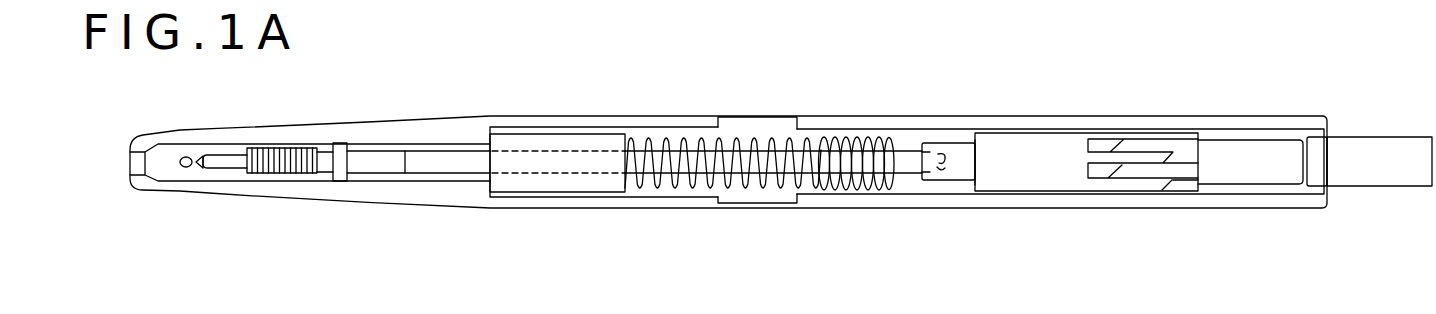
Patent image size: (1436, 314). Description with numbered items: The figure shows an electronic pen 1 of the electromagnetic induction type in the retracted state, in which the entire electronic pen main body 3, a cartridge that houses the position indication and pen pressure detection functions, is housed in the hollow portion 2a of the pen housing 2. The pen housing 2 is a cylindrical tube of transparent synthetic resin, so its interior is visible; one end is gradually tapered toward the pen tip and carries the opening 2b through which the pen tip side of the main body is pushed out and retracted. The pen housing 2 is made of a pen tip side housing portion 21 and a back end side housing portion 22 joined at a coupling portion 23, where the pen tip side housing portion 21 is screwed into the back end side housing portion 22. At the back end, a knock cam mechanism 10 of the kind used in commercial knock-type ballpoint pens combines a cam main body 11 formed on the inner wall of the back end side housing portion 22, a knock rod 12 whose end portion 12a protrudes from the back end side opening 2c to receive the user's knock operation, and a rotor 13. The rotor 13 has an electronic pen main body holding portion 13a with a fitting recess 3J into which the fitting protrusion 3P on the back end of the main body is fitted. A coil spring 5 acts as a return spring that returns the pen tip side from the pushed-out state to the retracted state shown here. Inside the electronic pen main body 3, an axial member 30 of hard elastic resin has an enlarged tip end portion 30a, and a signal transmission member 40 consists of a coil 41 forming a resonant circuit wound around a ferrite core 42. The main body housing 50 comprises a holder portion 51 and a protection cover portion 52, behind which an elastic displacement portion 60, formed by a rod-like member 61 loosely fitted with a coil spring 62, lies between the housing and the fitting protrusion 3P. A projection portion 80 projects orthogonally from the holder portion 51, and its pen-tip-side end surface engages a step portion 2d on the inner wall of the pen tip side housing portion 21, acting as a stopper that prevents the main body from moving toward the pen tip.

The electronic pen 1 is at (1158, 114).
The pen housing 2 is at (627, 47).
The hollow portion 2a is at (908, 137).
The opening 2b is at (128, 164).
The back end side opening 2c is at (1328, 136).
The step portion 2d is at (247, 181).
The electronic pen main body 3 is at (400, 180).
The fitting protrusion 3P is at (942, 153).
The fitting recess 3J is at (943, 168).
The coil spring 5 is at (782, 190).
The knock cam mechanism 10 is at (1390, 265).
The cam main body 11 is at (1135, 174).
The knock rod 12 is at (1247, 184).
The end portion 12a is at (1360, 176).
The rotor 13 is at (1033, 174).
The electronic pen main body holding portion 13a is at (955, 174).
The pen tip side housing portion 21 is at (643, 126).
The back end side housing portion 22 is at (828, 125).
The coupling portion 23 is at (748, 109).
The axial member 30 is at (197, 170).
The tip end portion 30a is at (187, 157).
The signal transmission member 40 is at (265, 180).
The coil 41 is at (283, 160).
The ferrite core 42 is at (230, 163).
The main body housing 50 is at (362, 82).
The holder portion 51 is at (373, 157).
The protection cover portion 52 is at (440, 157).
The elastic displacement portion 60 is at (773, 283).
The rod-like member 61 is at (851, 183).
The coil spring 62 is at (819, 180).
The projection portion 80 is at (339, 185).